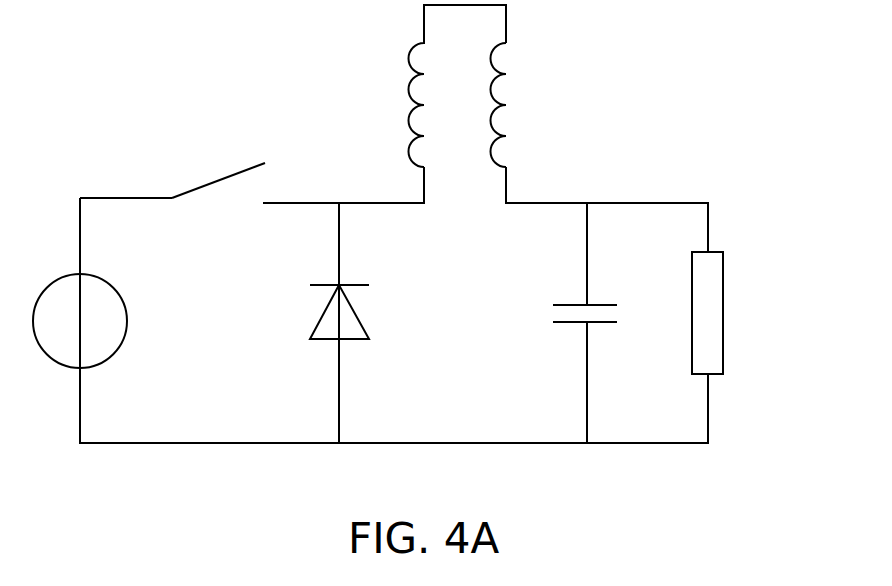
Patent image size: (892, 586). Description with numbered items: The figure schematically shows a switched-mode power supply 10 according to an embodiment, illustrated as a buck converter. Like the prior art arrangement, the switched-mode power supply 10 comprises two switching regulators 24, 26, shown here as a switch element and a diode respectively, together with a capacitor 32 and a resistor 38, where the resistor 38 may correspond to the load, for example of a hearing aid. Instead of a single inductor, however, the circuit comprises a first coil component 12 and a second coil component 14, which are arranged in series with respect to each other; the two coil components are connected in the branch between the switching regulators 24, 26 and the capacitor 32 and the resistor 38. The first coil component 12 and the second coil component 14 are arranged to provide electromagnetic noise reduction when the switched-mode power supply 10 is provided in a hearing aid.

The switched-mode power supply 10 is at (148, 103).
The first coil component 12 is at (407, 59).
The second coil component 14 is at (507, 73).
The switching regulator 24 is at (232, 173).
The switching regulator 26 is at (316, 323).
The capacitor 32 is at (553, 314).
The resistor 38 is at (724, 271).